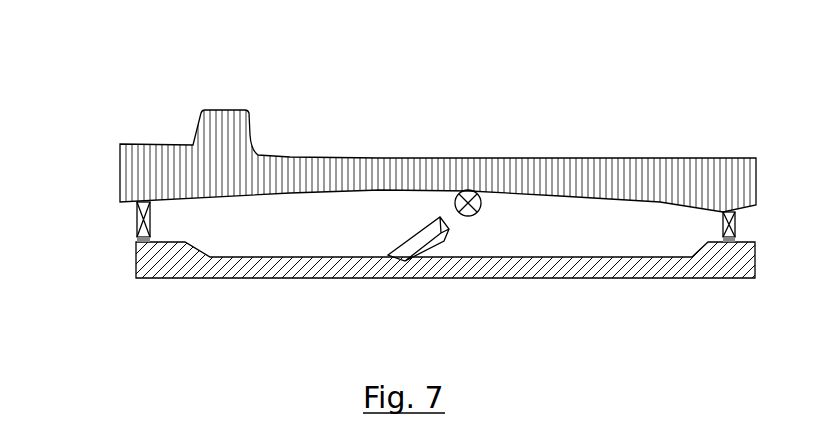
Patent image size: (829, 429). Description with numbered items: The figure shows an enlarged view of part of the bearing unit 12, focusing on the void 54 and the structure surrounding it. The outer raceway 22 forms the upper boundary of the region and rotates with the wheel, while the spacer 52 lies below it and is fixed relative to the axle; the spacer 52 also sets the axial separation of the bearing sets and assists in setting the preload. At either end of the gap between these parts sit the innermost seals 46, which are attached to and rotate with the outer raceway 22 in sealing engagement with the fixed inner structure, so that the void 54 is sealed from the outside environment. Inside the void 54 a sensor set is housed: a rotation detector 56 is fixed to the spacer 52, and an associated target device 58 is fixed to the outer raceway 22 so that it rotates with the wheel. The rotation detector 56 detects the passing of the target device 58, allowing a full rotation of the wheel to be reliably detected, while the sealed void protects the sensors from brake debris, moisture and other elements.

The bearing unit 12 is at (570, 108).
The outer raceway 22 is at (638, 162).
The seal 46 is at (135, 223).
The spacer 52 is at (308, 258).
The void 54 is at (560, 246).
The rotation detector 56 is at (409, 238).
The target device 58 is at (465, 190).